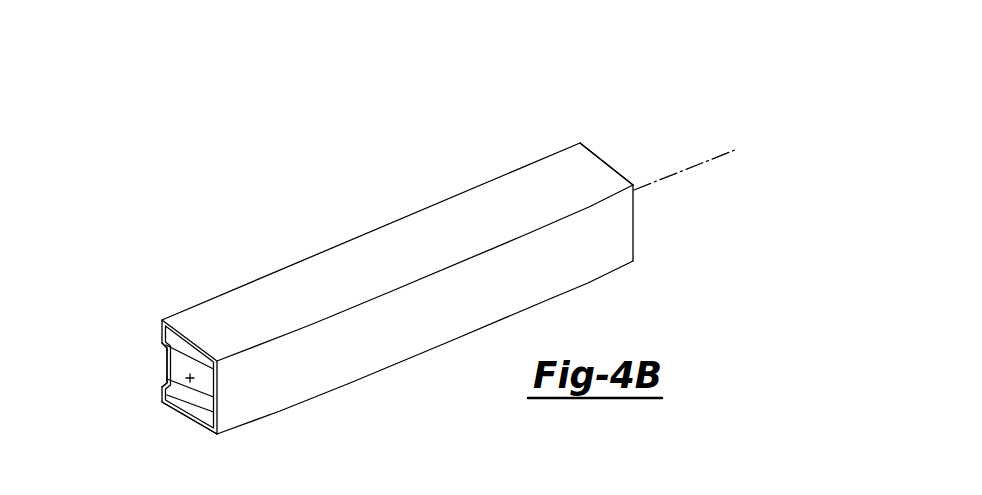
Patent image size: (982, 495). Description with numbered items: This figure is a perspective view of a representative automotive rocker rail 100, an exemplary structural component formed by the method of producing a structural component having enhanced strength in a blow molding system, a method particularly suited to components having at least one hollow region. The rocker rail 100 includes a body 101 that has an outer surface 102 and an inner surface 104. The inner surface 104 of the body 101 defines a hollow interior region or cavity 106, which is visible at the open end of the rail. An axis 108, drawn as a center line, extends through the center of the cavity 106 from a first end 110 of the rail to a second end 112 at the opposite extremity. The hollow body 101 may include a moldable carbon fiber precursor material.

The rocker rail 100 is at (407, 240).
The body 101 is at (485, 205).
The outer surface 102 is at (350, 353).
The inner surface 104 is at (203, 414).
The cavity 106 is at (182, 365).
The axis 108 is at (160, 393).
The first end 110 is at (148, 332).
The second end 112 is at (601, 140).